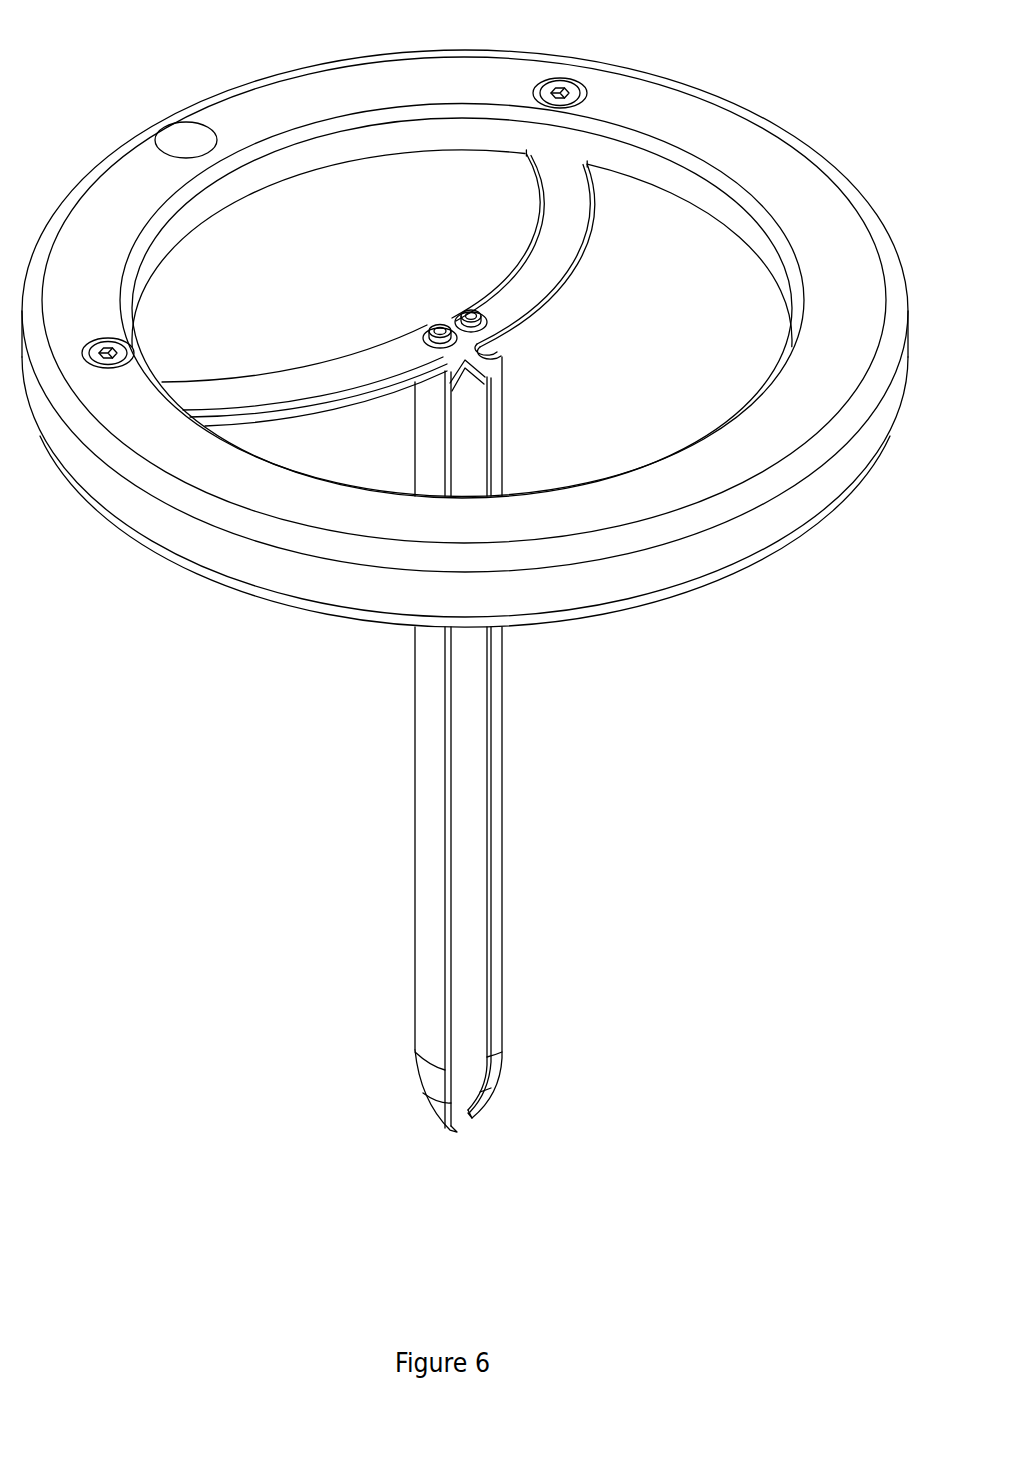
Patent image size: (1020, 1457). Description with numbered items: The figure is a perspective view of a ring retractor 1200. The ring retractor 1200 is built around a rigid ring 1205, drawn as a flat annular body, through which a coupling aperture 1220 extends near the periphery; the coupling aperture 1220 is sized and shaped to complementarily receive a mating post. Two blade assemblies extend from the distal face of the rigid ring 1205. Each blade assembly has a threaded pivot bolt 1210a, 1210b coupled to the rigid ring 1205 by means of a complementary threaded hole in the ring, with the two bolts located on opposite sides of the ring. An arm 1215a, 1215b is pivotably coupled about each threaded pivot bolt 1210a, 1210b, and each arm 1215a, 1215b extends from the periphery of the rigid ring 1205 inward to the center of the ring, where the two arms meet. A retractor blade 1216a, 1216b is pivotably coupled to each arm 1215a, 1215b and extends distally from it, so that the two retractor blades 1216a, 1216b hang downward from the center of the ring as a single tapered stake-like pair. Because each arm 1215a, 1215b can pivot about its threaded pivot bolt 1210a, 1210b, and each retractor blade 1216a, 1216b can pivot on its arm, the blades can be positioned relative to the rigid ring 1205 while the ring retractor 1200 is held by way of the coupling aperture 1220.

The ring retractor 1200 is at (465, 567).
The rigid ring 1205 is at (677, 481).
The threaded pivot bolt 1210a is at (560, 93).
The threaded pivot bolt 1210b is at (117, 370).
The arm 1215a is at (553, 247).
The arm 1215b is at (303, 387).
The retractor blade 1216a is at (472, 924).
The retractor blade 1216b is at (432, 967).
The coupling aperture 1220 is at (190, 138).